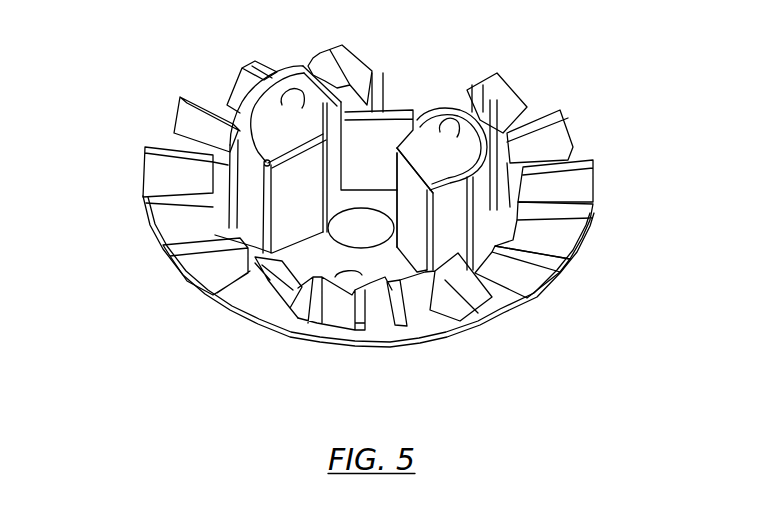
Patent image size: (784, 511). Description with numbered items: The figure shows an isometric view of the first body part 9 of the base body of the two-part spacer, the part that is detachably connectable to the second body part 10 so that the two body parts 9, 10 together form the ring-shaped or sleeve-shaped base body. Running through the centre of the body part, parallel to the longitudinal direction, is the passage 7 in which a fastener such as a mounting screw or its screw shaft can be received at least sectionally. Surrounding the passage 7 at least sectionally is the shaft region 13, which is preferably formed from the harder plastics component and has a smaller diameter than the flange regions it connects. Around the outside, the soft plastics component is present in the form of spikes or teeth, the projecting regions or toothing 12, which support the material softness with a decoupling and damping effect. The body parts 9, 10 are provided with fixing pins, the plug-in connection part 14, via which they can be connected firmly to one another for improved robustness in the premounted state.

The first body part 9 is at (364, 184).
The second body part 10 is at (188, 44).
The projecting regions/toothing 12 is at (253, 155).
The passage 7 is at (373, 233).
The plug-in connection part 14 is at (370, 233).
The shaft region 13 is at (407, 197).